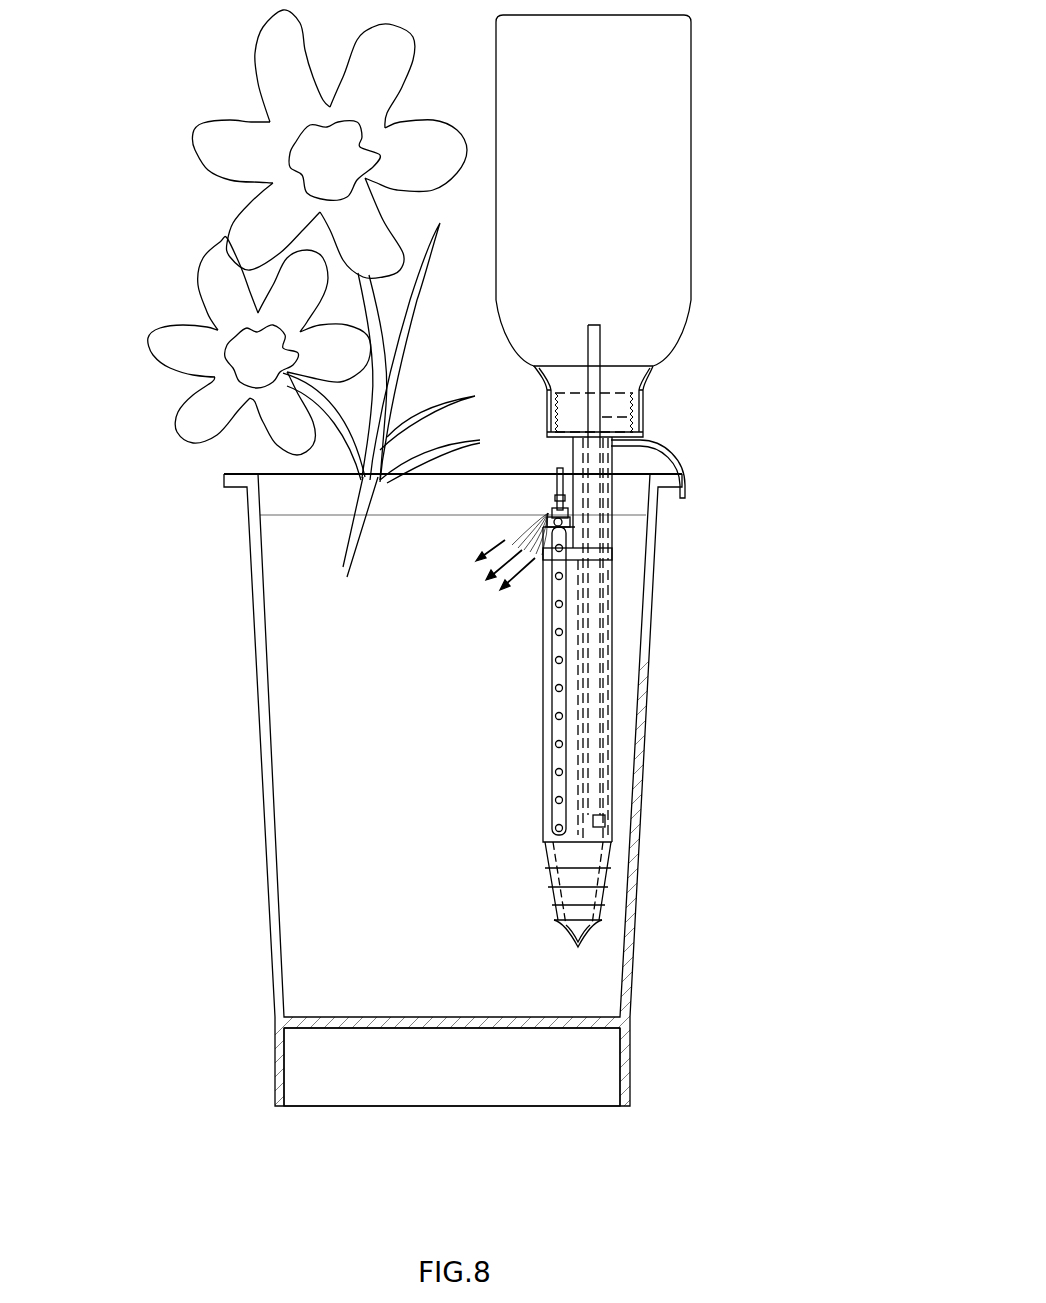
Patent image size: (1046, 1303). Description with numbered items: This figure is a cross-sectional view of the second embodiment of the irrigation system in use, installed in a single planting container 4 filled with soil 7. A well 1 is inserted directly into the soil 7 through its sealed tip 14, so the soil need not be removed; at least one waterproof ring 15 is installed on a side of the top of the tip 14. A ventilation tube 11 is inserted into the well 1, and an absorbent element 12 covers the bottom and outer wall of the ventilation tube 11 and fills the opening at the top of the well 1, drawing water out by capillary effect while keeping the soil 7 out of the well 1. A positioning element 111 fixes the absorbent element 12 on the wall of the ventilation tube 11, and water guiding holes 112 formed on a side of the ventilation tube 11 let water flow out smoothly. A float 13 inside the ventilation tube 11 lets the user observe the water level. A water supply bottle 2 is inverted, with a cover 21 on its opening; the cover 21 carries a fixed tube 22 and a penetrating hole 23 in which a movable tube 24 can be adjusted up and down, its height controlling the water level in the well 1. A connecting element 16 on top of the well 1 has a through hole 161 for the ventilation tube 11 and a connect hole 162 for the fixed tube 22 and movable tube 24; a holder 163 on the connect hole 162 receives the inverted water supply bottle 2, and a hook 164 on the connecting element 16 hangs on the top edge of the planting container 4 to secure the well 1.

The well 1 is at (613, 708).
The water supply bottle 2 is at (676, 102).
The planting container 4 is at (277, 1060).
The soil 7 is at (300, 950).
The ventilation tube 11 is at (553, 507).
The absorbent element 12 is at (545, 522).
The float 13 is at (557, 476).
The tip 14 is at (585, 952).
The waterproof ring 15 is at (606, 890).
The connecting element 16 is at (612, 497).
The cover 21 is at (645, 427).
The fixed tube 22 is at (600, 823).
The penetrating hole 23 is at (645, 414).
The movable tube 24 is at (602, 320).
The positioning element 111 is at (546, 572).
The water guiding holes 112 is at (558, 716).
The through hole 161 is at (610, 587).
The connect hole 162 is at (610, 537).
The holder 163 is at (650, 370).
The hook 164 is at (678, 453).